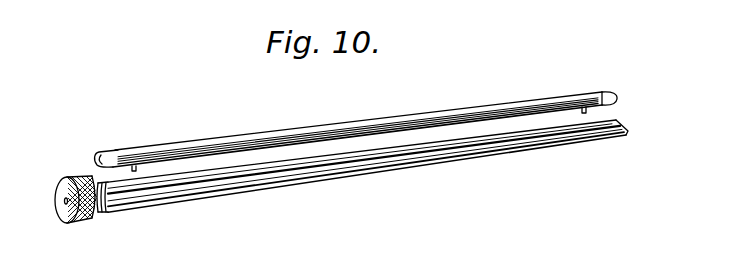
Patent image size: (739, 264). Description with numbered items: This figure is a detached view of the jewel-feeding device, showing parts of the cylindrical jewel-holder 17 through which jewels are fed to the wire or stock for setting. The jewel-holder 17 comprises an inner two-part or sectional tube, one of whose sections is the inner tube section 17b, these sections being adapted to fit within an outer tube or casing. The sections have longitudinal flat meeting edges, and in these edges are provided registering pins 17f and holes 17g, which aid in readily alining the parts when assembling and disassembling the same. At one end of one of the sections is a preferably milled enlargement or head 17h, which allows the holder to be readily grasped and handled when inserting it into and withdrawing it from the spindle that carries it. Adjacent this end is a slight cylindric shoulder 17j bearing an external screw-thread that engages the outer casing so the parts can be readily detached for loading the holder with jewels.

The jewel-holder 17 is at (270, 197).
The inner tube section 17b is at (240, 126).
The registering pin 17f is at (143, 205).
The registering hole 17g is at (138, 165).
The milled enlargement or head 17h is at (78, 177).
The collar 17j is at (105, 212).